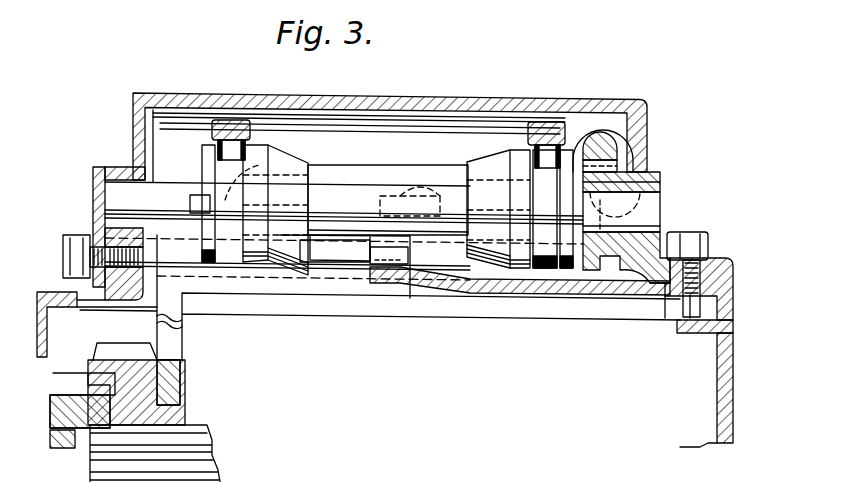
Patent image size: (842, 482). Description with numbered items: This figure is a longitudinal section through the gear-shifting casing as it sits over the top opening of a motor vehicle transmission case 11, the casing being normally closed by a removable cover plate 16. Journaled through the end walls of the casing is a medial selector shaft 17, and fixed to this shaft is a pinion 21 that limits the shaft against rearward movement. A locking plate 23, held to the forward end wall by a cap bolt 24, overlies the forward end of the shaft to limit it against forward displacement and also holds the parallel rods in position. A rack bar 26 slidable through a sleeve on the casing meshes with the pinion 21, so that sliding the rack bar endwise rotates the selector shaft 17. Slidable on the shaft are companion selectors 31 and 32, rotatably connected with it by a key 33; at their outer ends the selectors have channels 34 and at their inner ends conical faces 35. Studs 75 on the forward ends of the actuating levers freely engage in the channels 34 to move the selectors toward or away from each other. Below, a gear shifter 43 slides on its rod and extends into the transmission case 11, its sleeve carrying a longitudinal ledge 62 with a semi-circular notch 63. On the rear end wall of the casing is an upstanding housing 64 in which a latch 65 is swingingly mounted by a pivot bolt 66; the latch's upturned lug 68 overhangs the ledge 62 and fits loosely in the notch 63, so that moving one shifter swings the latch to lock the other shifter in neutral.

The transmission case 11 is at (719, 412).
The cover plate 16 is at (572, 98).
The selector shaft 17 is at (626, 227).
The pinion 21 is at (618, 167).
The locking plate 23 is at (100, 170).
The cap bolt 24 is at (76, 238).
The rack bar 26 is at (603, 134).
The selector 31 is at (204, 151).
The selector 32 is at (510, 152).
The key 33 is at (400, 211).
The channel 34 is at (252, 160).
The conical face 35 is at (377, 210).
The gear shifter 43 is at (183, 337).
The ledge 62 is at (360, 265).
The notch 63 is at (327, 253).
The housing 64 is at (725, 258).
The latch 65 is at (545, 294).
The pivot bolt 66 is at (688, 233).
The lug 68 is at (395, 252).
The stud 75 is at (233, 132).